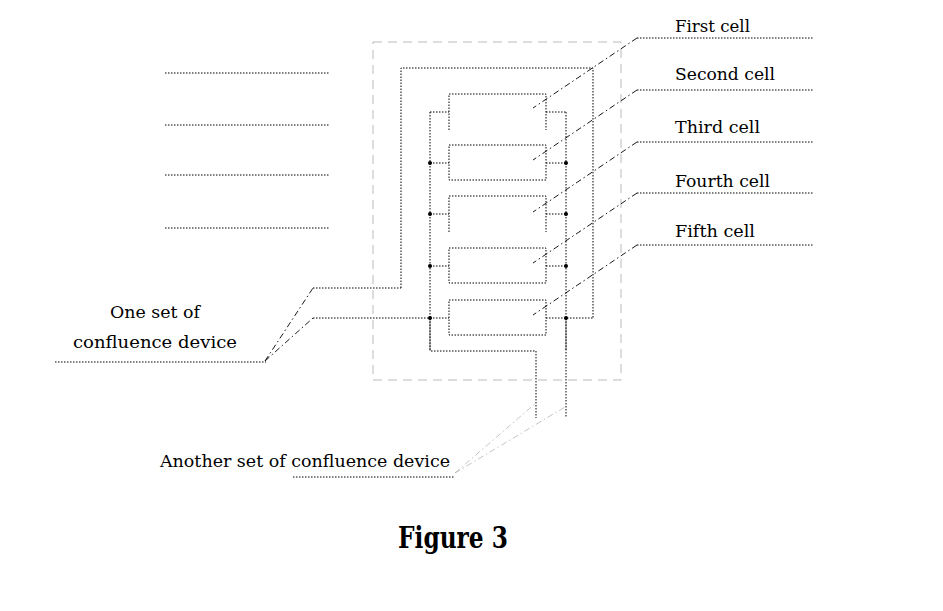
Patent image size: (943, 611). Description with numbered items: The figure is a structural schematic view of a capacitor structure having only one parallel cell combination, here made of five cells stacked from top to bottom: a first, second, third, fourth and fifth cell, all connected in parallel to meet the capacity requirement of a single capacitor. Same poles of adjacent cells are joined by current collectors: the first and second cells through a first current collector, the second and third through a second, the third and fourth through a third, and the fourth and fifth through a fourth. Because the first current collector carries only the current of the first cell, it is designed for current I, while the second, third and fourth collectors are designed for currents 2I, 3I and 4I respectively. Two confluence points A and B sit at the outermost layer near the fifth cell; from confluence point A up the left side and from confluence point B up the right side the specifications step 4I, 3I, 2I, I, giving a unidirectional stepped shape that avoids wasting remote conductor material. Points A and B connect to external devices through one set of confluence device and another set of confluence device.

The current I is at (430, 137).
The current 2I is at (430, 188).
The current 3I is at (430, 241).
The current 4I is at (430, 292).
The confluence point A is at (416, 338).
The confluence point B is at (582, 338).